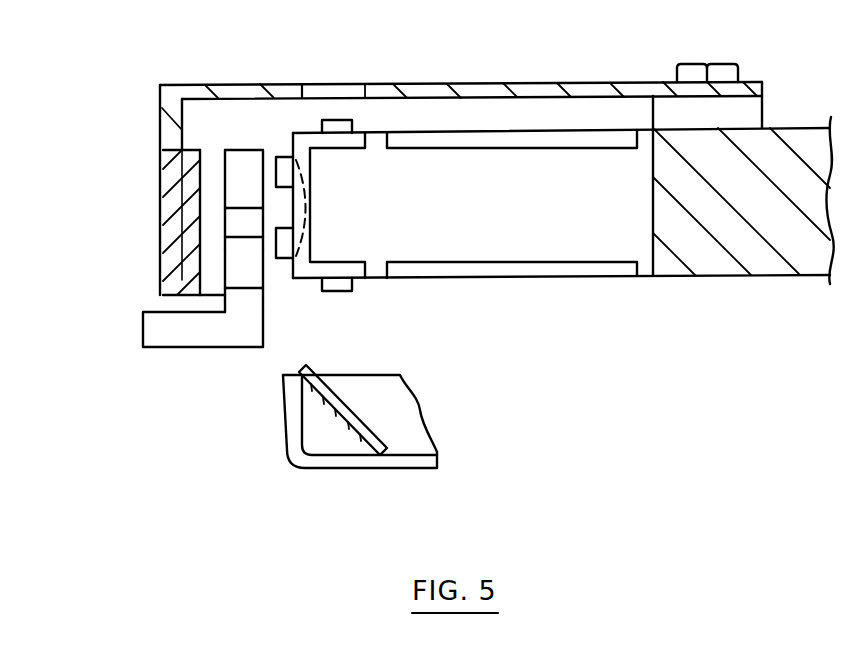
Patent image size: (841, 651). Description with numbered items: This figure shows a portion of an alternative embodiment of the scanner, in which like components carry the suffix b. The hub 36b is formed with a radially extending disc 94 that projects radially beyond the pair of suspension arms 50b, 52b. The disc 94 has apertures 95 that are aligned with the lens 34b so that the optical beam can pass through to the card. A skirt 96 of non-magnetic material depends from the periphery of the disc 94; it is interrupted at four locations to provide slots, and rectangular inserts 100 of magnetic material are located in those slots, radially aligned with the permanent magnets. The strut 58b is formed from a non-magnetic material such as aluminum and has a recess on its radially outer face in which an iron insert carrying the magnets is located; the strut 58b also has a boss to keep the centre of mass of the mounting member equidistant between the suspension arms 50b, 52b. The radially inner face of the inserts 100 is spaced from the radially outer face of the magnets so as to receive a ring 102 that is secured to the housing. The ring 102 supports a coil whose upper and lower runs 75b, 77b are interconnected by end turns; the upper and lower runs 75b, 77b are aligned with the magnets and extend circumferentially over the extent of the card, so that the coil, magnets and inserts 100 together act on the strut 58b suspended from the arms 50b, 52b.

The disc 94 is at (488, 84).
The apertures 95 is at (304, 84).
The skirt 96 is at (171, 121).
The rectangular inserts 100 is at (172, 182).
The upper run 75b is at (243, 162).
The lower run 77b is at (252, 274).
The ring 102 is at (203, 338).
The lens 34b is at (338, 120).
The strut 58b is at (312, 182).
The suspension arm 50b is at (505, 140).
The suspension arm 52b is at (502, 272).
The hub 36b is at (806, 252).